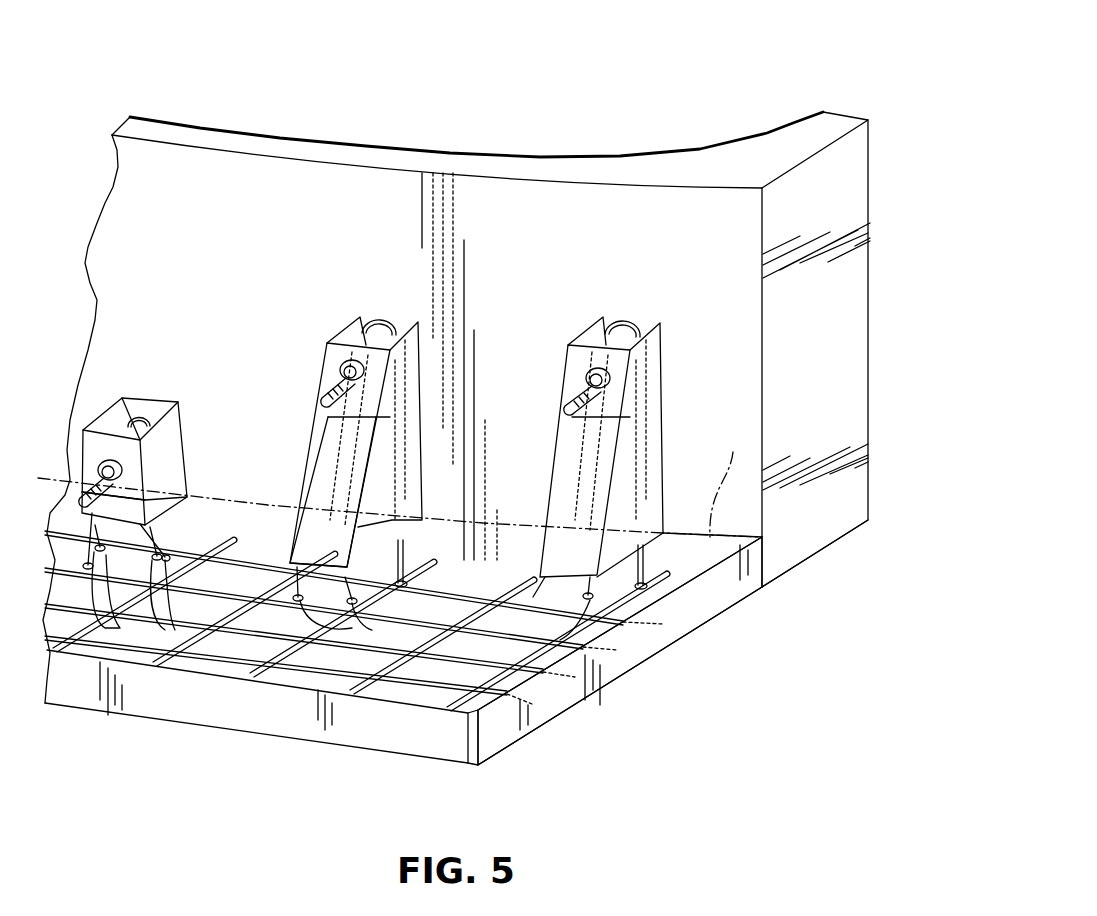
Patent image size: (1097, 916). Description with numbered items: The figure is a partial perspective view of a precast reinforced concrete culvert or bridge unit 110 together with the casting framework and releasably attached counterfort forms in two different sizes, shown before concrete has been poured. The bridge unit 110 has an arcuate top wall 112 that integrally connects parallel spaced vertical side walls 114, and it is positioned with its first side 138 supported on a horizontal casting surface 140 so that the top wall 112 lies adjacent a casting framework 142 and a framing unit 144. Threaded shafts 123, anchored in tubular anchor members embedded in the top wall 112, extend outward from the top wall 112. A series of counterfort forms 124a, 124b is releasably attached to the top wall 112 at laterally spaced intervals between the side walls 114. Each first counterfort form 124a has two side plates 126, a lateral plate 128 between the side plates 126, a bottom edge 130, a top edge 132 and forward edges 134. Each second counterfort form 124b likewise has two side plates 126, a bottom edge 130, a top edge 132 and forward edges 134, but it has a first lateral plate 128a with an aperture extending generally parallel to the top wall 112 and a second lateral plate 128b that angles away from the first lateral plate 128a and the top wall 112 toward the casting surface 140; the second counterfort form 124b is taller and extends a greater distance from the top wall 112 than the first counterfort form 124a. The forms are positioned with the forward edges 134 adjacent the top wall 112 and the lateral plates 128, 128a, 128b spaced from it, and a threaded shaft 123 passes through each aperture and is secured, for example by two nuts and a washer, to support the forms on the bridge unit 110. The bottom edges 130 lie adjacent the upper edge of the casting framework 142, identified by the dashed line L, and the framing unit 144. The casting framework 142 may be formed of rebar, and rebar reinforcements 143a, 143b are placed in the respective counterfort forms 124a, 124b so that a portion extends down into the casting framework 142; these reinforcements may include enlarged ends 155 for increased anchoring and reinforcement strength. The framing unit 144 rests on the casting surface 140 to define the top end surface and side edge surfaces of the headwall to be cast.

The bridge unit 110 is at (769, 86).
The top wall 112 is at (548, 166).
The side walls 114 is at (838, 349).
The threaded shaft 123 is at (140, 495).
The first counterfort form 124a is at (98, 437).
The second counterfort form 124b is at (322, 426).
The side plates 126 is at (122, 412).
The lateral plate 128 is at (88, 476).
The first lateral plate 128a is at (333, 343).
The second lateral plate 128b is at (318, 497).
The bottom edge 130 is at (185, 502).
The top edge 132 is at (90, 444).
The forward edges 134 is at (185, 450).
The first side 138 is at (810, 558).
The horizontal casting surface 140 is at (430, 676).
The casting framework 142 is at (315, 695).
The rebar reinforcement 143a is at (82, 549).
The rebar reinforcement 143b is at (440, 560).
The framing unit 144 is at (548, 697).
The enlarged ends 155 is at (108, 622).
The dashed line L is at (724, 482).